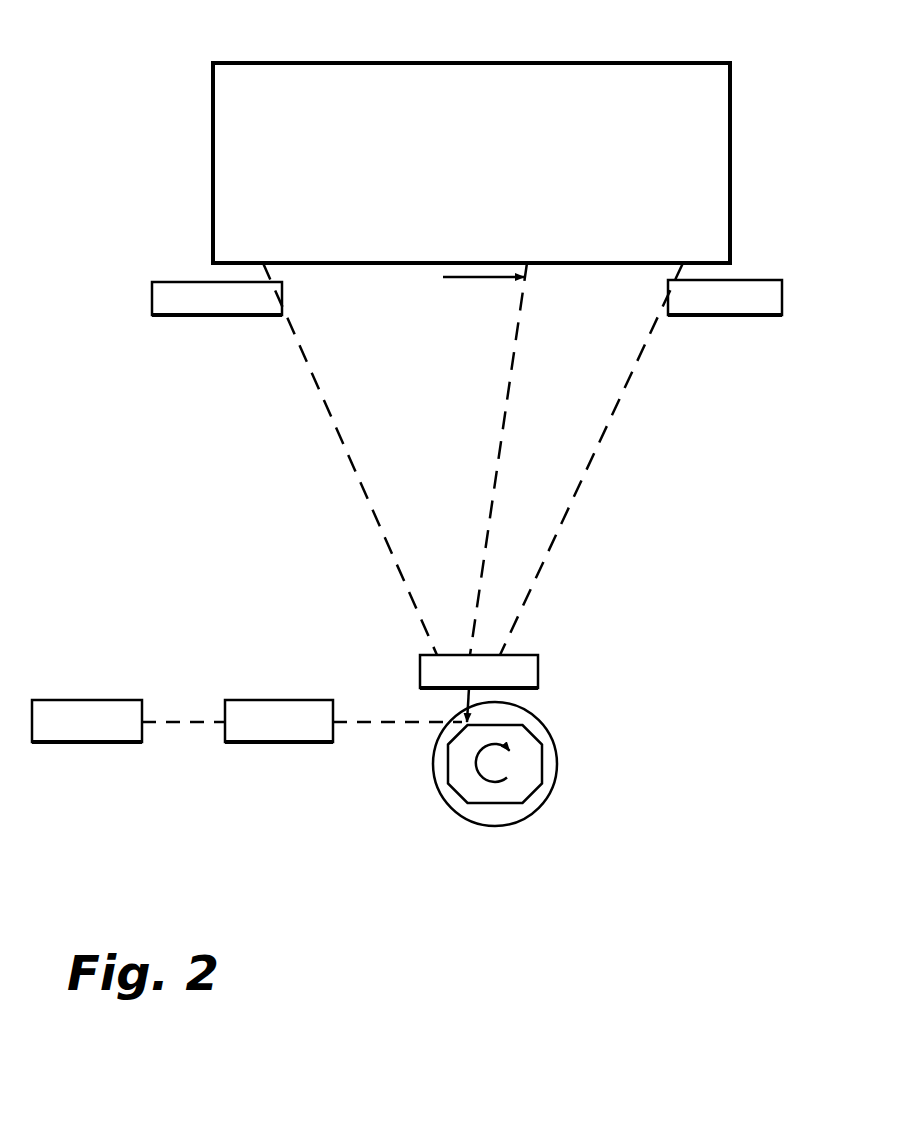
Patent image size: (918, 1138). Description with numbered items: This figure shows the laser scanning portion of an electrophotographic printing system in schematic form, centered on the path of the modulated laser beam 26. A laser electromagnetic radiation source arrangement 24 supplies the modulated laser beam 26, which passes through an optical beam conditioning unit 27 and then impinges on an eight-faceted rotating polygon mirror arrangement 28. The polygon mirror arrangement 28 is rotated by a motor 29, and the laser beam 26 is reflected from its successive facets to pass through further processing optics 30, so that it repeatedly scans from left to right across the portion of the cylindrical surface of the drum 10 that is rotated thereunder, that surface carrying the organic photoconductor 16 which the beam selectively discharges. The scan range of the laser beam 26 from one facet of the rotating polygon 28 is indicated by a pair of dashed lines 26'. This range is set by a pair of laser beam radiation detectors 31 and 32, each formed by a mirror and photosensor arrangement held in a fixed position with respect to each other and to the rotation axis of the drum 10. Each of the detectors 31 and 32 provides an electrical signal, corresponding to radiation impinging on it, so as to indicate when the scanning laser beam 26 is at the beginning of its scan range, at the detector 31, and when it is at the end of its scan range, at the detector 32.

The drum 10 is at (748, 86).
The organic photoconductor 16 is at (650, 63).
The laser electromagnetic radiation source arrangement 24 is at (68, 700).
The modulated laser beam 26 is at (364, 492).
The dashed lines indicating scan range 26' is at (470, 459).
The optical beam conditioning unit 27 is at (325, 672).
The rotating polygon mirror arrangement 28 is at (542, 770).
The motor 29 is at (553, 742).
The further processing optics 30 is at (540, 665).
The laser beam radiation detector 31 is at (190, 318).
The laser beam radiation detector 32 is at (715, 318).